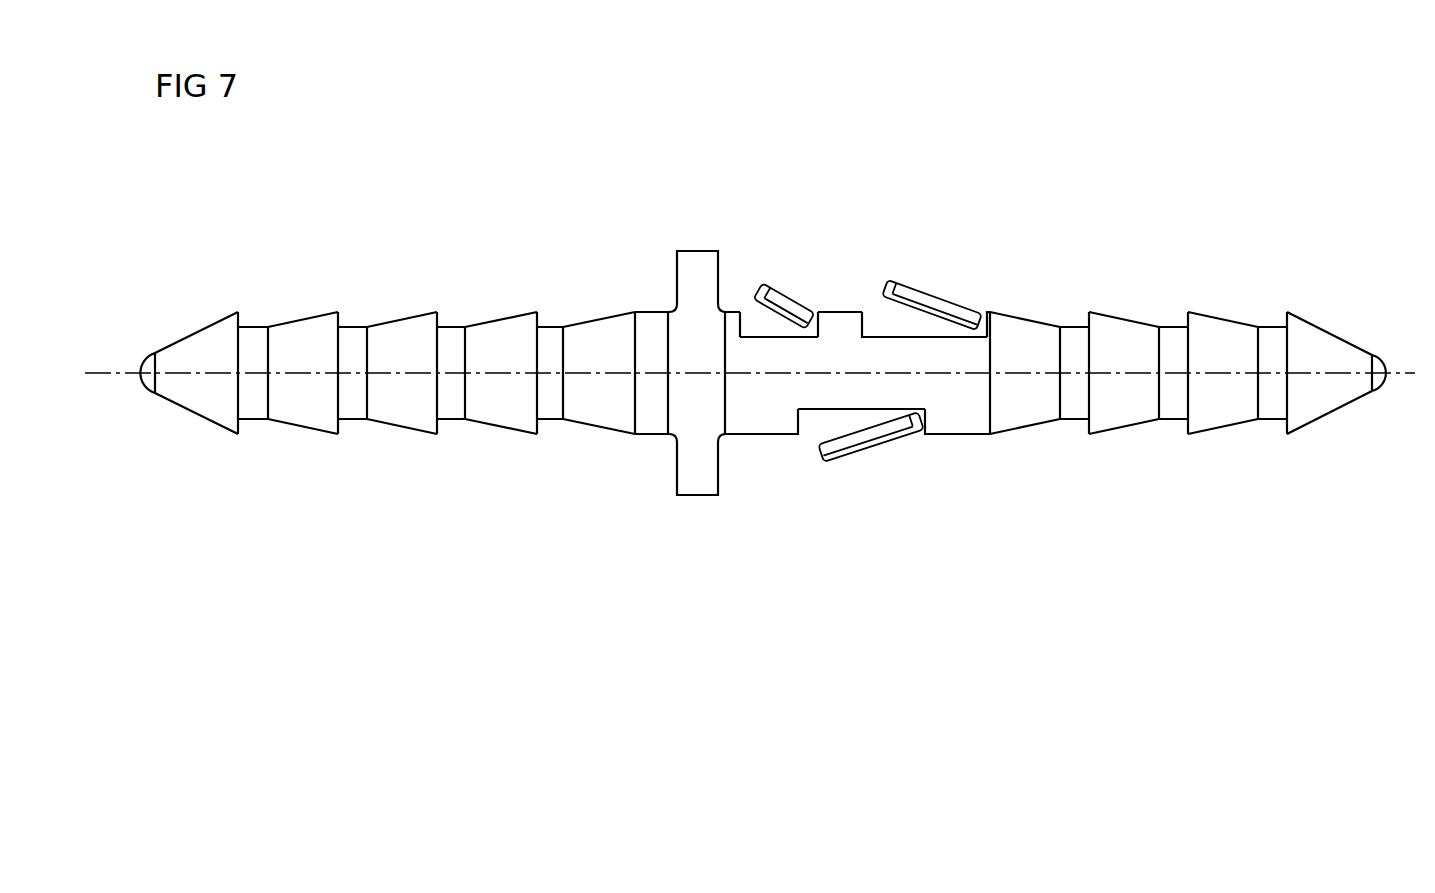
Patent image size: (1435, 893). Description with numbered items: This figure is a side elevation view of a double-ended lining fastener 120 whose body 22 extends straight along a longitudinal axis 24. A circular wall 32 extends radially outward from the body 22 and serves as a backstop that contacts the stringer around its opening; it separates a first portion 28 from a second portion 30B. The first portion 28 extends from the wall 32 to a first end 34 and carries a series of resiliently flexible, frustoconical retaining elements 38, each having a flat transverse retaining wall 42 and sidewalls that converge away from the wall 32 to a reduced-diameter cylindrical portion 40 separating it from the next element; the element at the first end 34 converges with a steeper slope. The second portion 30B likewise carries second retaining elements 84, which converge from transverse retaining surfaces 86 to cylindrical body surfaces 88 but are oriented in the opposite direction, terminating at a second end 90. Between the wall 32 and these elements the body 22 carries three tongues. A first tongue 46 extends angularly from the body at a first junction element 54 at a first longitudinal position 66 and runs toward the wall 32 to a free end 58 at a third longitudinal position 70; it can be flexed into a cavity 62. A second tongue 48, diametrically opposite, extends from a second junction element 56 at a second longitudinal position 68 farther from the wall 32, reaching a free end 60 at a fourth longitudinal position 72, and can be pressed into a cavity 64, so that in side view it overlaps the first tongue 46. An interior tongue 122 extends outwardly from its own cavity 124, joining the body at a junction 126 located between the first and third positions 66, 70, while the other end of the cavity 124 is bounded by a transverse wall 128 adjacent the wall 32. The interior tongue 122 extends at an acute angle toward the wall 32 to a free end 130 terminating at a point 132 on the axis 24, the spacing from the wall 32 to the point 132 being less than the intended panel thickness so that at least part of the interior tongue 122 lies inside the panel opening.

The lining fastener 120 is at (480, 167).
The second portion 30B is at (1063, 190).
The body 22 is at (635, 312).
The longitudinal axis 24 is at (106, 373).
The first portion 28 is at (348, 297).
The wall 32 is at (700, 250).
The first end 34 is at (147, 392).
The retaining elements 38 is at (215, 403).
The cylindrical portions 40 is at (250, 410).
The retaining walls 42 is at (238, 312).
The first tongue 46 is at (877, 445).
The second tongue 48 is at (955, 307).
The first junction element 54 is at (925, 420).
The second junction element 56 is at (992, 312).
The free end of first tongue 58 is at (817, 458).
The free end of second tongue 60 is at (880, 285).
The cavity 62 is at (807, 446).
The cavity 64 is at (879, 312).
The first longitudinal position 66 is at (928, 375).
The second longitudinal position 68 is at (988, 368).
The third longitudinal position 70 is at (817, 380).
The fourth longitudinal position 72 is at (878, 370).
The second retaining elements 84 is at (1120, 423).
The retaining surfaces 86 is at (1083, 313).
The cylindrical body surfaces 88 is at (1165, 420).
The second end 90 is at (1385, 373).
The interior tongue 122 is at (800, 305).
The cavity 124 is at (785, 340).
The junction 126 is at (817, 307).
The transverse wall 128 is at (745, 315).
The free end of interior tongue 130 is at (752, 290).
The point 132 is at (748, 373).